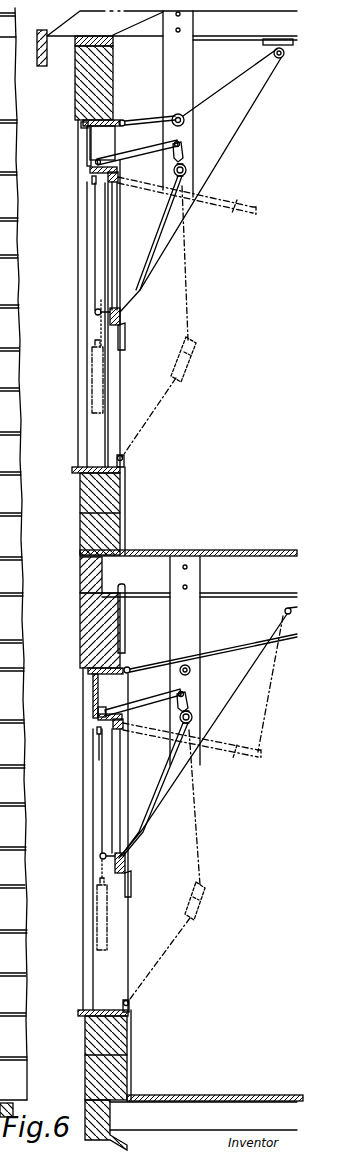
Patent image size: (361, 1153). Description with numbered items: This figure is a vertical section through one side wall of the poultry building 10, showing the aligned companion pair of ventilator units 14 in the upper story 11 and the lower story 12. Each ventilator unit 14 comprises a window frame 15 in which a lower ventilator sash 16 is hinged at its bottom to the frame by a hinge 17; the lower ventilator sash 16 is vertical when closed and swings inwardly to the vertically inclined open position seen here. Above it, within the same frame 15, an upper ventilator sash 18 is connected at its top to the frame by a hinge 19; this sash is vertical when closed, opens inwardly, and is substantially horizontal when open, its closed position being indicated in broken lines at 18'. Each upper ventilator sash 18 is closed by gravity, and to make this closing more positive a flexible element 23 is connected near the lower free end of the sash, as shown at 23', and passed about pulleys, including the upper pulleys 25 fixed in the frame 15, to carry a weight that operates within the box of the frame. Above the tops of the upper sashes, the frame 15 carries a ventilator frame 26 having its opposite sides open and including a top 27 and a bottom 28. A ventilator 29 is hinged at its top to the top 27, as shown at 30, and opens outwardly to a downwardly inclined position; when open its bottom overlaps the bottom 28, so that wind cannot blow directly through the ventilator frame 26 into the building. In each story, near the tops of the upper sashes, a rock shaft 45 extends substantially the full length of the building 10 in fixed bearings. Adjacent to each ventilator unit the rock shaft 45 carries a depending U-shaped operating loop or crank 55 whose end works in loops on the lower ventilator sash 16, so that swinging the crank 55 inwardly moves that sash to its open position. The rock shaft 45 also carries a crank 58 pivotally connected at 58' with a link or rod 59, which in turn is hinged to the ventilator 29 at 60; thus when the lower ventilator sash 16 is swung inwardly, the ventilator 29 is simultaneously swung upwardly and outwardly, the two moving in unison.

The poultry building 10 is at (36, 514).
The upper story 11 is at (0, 313).
The lower story 12 is at (0, 635).
The ventilator unit 14 is at (76, 264).
The window frame 15 is at (92, 440).
The lower ventilator sash 16 is at (123, 457).
The hinge 17 is at (124, 464).
The upper ventilator sash 18 is at (175, 536).
The arm in alternate position 18' is at (192, 750).
The hinge 19 is at (120, 174).
The flexible element 23 is at (74, 869).
The connection of flexible element 23' is at (80, 869).
The upper pulley 25 is at (97, 732).
The ventilator frame 26 is at (98, 143).
The top 27 is at (82, 122).
The bottom 28 is at (93, 178).
The ventilator 29 is at (90, 157).
The hinge connection of ventilator 30 is at (81, 125).
The rock shaft 45 is at (186, 166).
The operating loop or crank 55 is at (163, 231).
The crank 58 is at (200, 410).
The pivotal connection 58' is at (203, 387).
The link or rod 59 is at (137, 150).
The hinge connection of link 60 is at (100, 712).